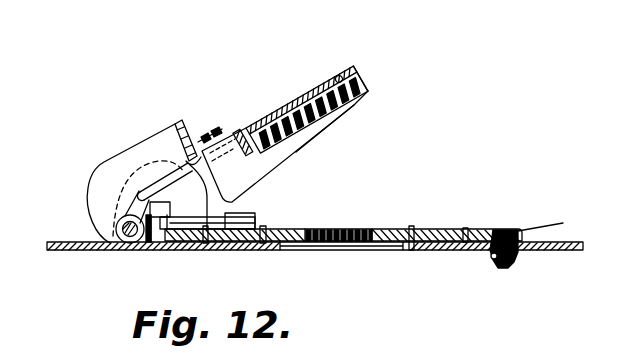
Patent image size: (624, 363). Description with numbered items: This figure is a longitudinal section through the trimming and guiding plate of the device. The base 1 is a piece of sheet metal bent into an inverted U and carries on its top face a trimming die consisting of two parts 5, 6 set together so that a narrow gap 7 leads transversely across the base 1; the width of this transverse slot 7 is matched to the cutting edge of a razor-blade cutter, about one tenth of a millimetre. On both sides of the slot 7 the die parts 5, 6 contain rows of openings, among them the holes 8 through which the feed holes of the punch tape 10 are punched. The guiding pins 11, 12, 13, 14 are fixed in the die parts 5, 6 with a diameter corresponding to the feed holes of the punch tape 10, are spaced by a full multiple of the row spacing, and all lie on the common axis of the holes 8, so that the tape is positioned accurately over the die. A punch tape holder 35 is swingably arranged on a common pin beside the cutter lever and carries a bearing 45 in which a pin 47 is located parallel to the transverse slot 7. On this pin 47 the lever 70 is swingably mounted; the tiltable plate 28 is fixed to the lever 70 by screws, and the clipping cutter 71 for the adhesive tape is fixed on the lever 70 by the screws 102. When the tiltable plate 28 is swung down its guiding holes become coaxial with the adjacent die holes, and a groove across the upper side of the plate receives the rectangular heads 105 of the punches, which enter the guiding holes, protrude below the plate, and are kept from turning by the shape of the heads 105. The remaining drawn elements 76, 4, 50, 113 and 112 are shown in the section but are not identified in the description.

The punch tape 10 is at (48, 242).
The slide strip 76 is at (347, 247).
The trimming die part 5 is at (287, 229).
The trimming die part 6 is at (433, 229).
The holes 8 is at (318, 229).
The gap (transverse slot) 7 is at (344, 229).
The guiding pin 11 is at (205, 244).
The guiding pin 12 is at (262, 244).
The guiding pin 13 is at (411, 226).
The guiding pin 14 is at (465, 228).
The base 1 is at (226, 244).
The punch tape holder 35 is at (246, 218).
The clamp 4 is at (493, 259).
The pin 47 is at (133, 244).
The lever 70 is at (143, 146).
The lever handle 50 is at (92, 211).
The bearing 45 is at (208, 197).
The clipping cutter 71 is at (270, 176).
The punch heads 105 is at (316, 135).
The screws 102 is at (222, 130).
The magazine 113 is at (298, 99).
The hole 112 is at (336, 72).
The tiltable plate 28 is at (361, 81).